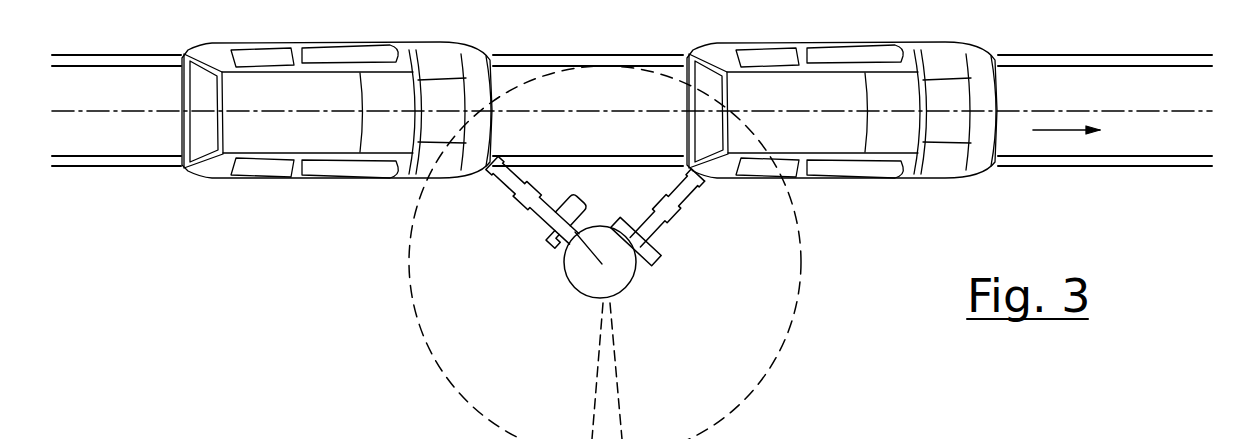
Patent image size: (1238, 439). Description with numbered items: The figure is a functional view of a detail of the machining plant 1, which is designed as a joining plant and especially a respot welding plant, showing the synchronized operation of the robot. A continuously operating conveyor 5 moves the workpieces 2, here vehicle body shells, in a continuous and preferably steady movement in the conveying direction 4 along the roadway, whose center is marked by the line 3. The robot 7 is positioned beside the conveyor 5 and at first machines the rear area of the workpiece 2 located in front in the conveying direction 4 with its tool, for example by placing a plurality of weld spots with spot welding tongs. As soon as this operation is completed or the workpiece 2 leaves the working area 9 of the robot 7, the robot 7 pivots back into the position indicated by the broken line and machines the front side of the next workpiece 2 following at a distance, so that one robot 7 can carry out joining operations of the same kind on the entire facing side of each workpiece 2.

The machining plant 1 is at (633, 181).
The workpiece 2 is at (372, 145).
The lane center line 3 is at (1138, 110).
The conveying direction 4 is at (1068, 133).
The conveyor 5 is at (1191, 160).
The robot 7 is at (602, 264).
The working area 9 is at (414, 305).